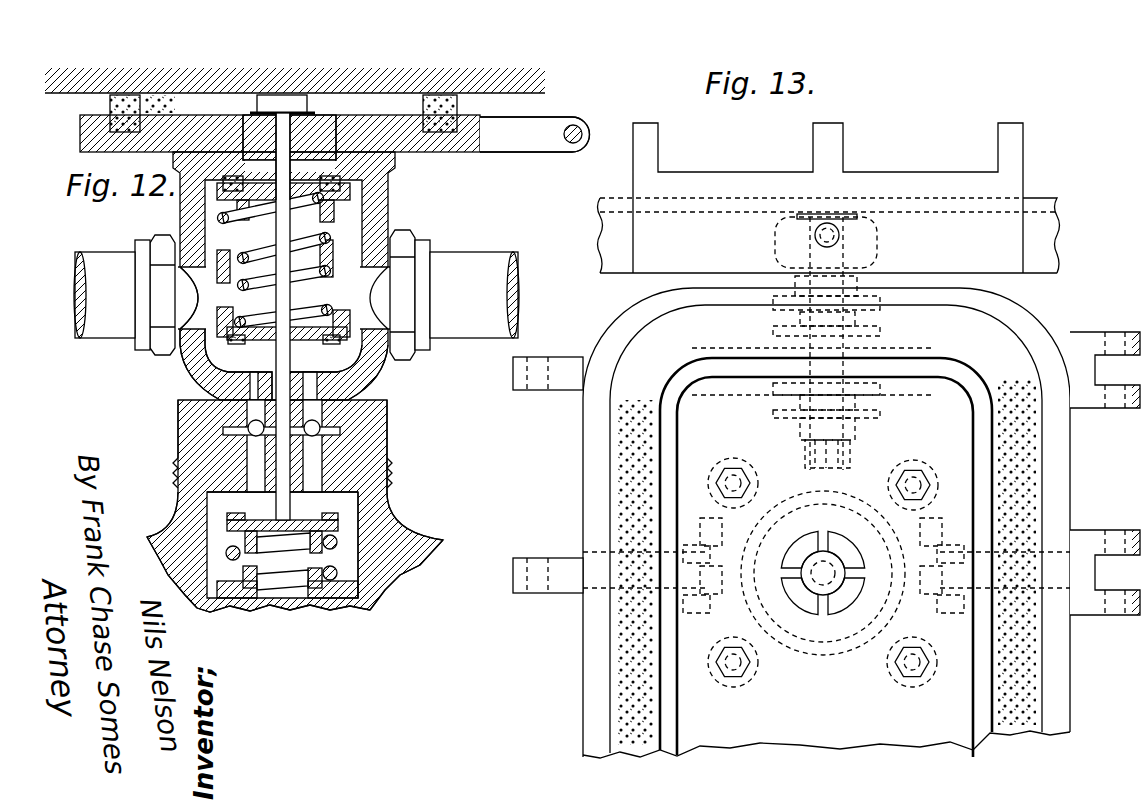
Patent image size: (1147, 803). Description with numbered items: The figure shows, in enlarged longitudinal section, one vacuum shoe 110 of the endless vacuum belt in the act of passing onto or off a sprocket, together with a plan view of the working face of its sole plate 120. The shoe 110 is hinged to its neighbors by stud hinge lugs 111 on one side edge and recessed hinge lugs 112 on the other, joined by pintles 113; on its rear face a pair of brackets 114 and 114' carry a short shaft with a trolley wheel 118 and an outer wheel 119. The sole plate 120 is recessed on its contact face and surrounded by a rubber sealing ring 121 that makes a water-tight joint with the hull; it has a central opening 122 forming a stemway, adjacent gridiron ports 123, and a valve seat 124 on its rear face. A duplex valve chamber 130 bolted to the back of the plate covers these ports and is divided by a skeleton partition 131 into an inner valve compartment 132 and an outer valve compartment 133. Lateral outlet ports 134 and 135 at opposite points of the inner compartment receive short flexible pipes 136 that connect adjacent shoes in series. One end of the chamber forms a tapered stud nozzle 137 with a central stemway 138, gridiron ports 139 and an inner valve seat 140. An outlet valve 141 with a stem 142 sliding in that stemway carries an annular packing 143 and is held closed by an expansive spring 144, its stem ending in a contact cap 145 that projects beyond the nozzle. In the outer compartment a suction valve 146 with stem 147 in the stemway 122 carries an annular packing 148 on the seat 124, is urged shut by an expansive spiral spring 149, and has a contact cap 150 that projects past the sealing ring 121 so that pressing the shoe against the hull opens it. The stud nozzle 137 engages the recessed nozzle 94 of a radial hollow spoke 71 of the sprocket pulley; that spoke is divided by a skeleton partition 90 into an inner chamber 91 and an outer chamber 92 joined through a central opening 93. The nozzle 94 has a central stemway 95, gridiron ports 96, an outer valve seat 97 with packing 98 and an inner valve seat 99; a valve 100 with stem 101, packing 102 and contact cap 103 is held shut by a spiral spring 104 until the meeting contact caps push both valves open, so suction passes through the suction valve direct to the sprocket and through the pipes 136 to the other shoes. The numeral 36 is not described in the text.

In FIG. 12, the pipe 36 is at (85, 283).
In FIG. 12, the radial hollow spoke 71 is at (413, 537).
In FIG. 12, the skeleton partition 90 is at (343, 592).
In FIG. 12, the inner chamber 91 is at (298, 610).
In FIG. 12, the outer chamber 92 is at (370, 492).
In FIG. 12, the central opening 93 is at (277, 595).
In FIG. 12, the recessed nozzle 94 is at (367, 443).
In FIG. 12, the central stemway 95 is at (250, 472).
In FIG. 12, the gridiron ports 96 is at (253, 472).
In FIG. 12, the valve seat 97 is at (178, 450).
In FIG. 12, the packing 98 is at (223, 431).
In FIG. 12, the valve seat 99 is at (180, 535).
In FIG. 12, the valve 100 is at (190, 566).
In FIG. 12, the stem 101 is at (355, 502).
In FIG. 12, the packing 102 is at (347, 525).
In FIG. 12, the contact cap 103 is at (367, 462).
In FIG. 12, the spiral spring 104 is at (380, 575).
In FIG. 12, the vacuum shoe 110 is at (535, 152).
In FIG. 13, the vacuum shoe 110 is at (560, 483).
In FIG. 13, the stud hinge lugs 111 is at (563, 380).
In FIG. 13, the recessed hinge lugs 112 is at (1070, 335).
In FIG. 12, the pintle 113 is at (573, 124).
In FIG. 13, the bracket 114 is at (801, 343).
In FIG. 13, the bracket 114' is at (868, 301).
In FIG. 13, the trolley wheel 118 is at (865, 334).
In FIG. 13, the wheel 119 is at (852, 243).
In FIG. 12, the sole plate 120 is at (395, 165).
In FIG. 13, the sole plate 120 is at (826, 552).
In FIG. 12, the sealing ring 121 is at (110, 107).
In FIG. 13, the sealing ring 121 is at (625, 673).
In FIG. 12, the central opening 122 is at (314, 150).
In FIG. 13, the central opening 122 is at (823, 577).
In FIG. 12, the gridiron ports 123 is at (235, 103).
In FIG. 12, the valve seat 124 is at (337, 157).
In FIG. 12, the duplex valve chamber 130 is at (370, 245).
In FIG. 12, the skeleton partition 131 is at (228, 278).
In FIG. 12, the inner valve compartment 132 is at (185, 377).
In FIG. 12, the outer valve compartment 133 is at (362, 200).
In FIG. 12, the lateral outlet port 134 is at (187, 283).
In FIG. 12, the lateral outlet port 135 is at (377, 287).
In FIG. 12, the flexible pipe 136 is at (492, 273).
In FIG. 12, the tapered stud nozzle 137 is at (200, 385).
In FIG. 12, the central stemway 138 is at (178, 412).
In FIG. 12, the gridiron ports 139 is at (312, 390).
In FIG. 12, the inner valve seat 140 is at (360, 377).
In FIG. 12, the outlet valve 141 is at (287, 308).
In FIG. 12, the stem 142 is at (373, 397).
In FIG. 12, the annular packing 143 is at (235, 385).
In FIG. 12, the expansive spring 144 is at (242, 290).
In FIG. 12, the contact cap 145 is at (345, 423).
In FIG. 12, the suction valve 146 is at (218, 210).
In FIG. 12, the stem 147 is at (288, 135).
In FIG. 12, the annular packing 148 is at (225, 185).
In FIG. 12, the expansive spiral spring 149 is at (350, 216).
In FIG. 12, the contact cap 150 is at (255, 100).